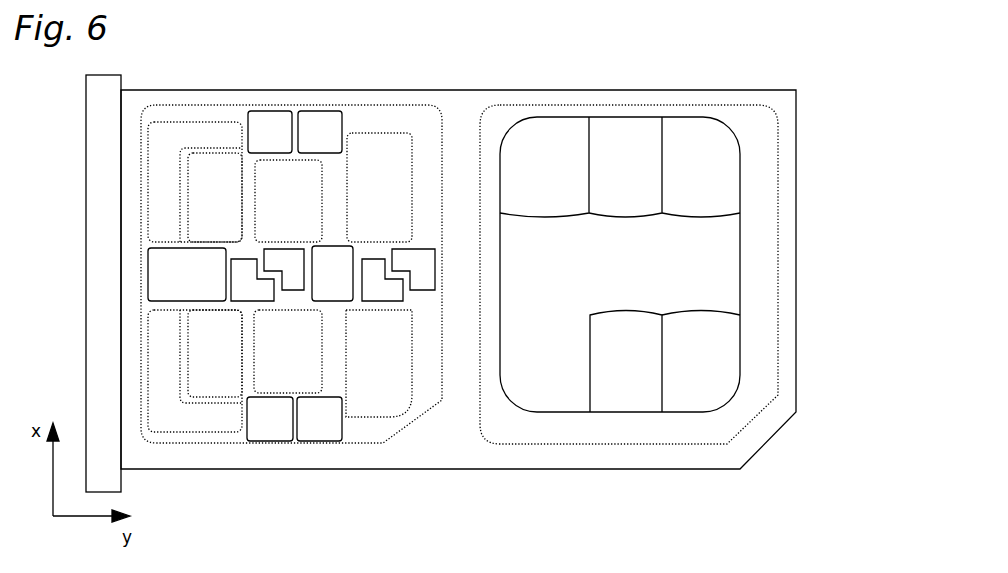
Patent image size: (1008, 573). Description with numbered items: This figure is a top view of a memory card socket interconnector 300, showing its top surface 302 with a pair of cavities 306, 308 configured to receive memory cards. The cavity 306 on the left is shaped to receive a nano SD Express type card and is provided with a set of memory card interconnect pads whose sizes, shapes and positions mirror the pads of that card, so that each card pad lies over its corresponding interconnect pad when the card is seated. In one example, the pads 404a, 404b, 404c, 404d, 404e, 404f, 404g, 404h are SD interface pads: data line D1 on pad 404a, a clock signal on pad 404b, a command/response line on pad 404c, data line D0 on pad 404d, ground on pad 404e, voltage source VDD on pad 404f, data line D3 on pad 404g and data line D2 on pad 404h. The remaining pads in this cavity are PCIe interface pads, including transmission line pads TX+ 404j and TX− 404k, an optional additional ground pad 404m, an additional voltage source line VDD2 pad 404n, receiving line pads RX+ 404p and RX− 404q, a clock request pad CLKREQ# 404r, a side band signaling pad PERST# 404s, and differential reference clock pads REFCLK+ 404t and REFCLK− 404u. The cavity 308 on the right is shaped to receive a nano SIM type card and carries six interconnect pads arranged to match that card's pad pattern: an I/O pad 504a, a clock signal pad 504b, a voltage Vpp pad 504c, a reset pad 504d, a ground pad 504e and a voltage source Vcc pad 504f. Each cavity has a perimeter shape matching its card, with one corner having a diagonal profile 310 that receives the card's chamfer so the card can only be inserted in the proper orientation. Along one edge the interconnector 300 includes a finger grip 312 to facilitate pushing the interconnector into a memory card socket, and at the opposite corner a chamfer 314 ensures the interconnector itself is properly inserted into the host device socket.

The memory card socket interconnector 300 is at (837, 87).
The top surface 302 is at (763, 104).
The cavity 306 is at (386, 119).
The cavity 308 is at (618, 125).
The diagonal profile 310 is at (405, 427).
The finger grip 312 is at (86, 192).
The chamfer 314 is at (788, 418).
The memory card interconnect pad 404a is at (379, 363).
The memory card interconnect pad 404b is at (379, 187).
The memory card interconnect pad 404c is at (288, 351).
The memory card interconnect pad 404d is at (288, 201).
The memory card interconnect pad 404e is at (211, 356).
The memory card interconnect pad 404f is at (211, 195).
The memory card interconnect pad 404g is at (195, 371).
The memory card interconnect pad 404h is at (195, 182).
The memory card interconnect pad 404j is at (393, 294).
The memory card interconnect pad 404k is at (415, 254).
The memory card interconnect pad 404m is at (330, 290).
The memory card interconnect pad 404n is at (187, 274).
The memory card interconnect pad 404p is at (245, 291).
The memory card interconnect pad 404q is at (269, 258).
The memory card interconnect pad 404r is at (327, 435).
The memory card interconnect pad 404s is at (270, 425).
The memory card interconnect pad 404t is at (335, 119).
The memory card interconnect pad 404u is at (280, 127).
The memory card interconnect pad 504a is at (701, 341).
The memory card interconnect pad 504b is at (701, 191).
The memory card interconnect pad 504c is at (626, 362).
The memory card interconnect pad 504d is at (625, 167).
The memory card interconnect pad 504e is at (577, 275).
The memory card interconnect pad 504f is at (544, 167).